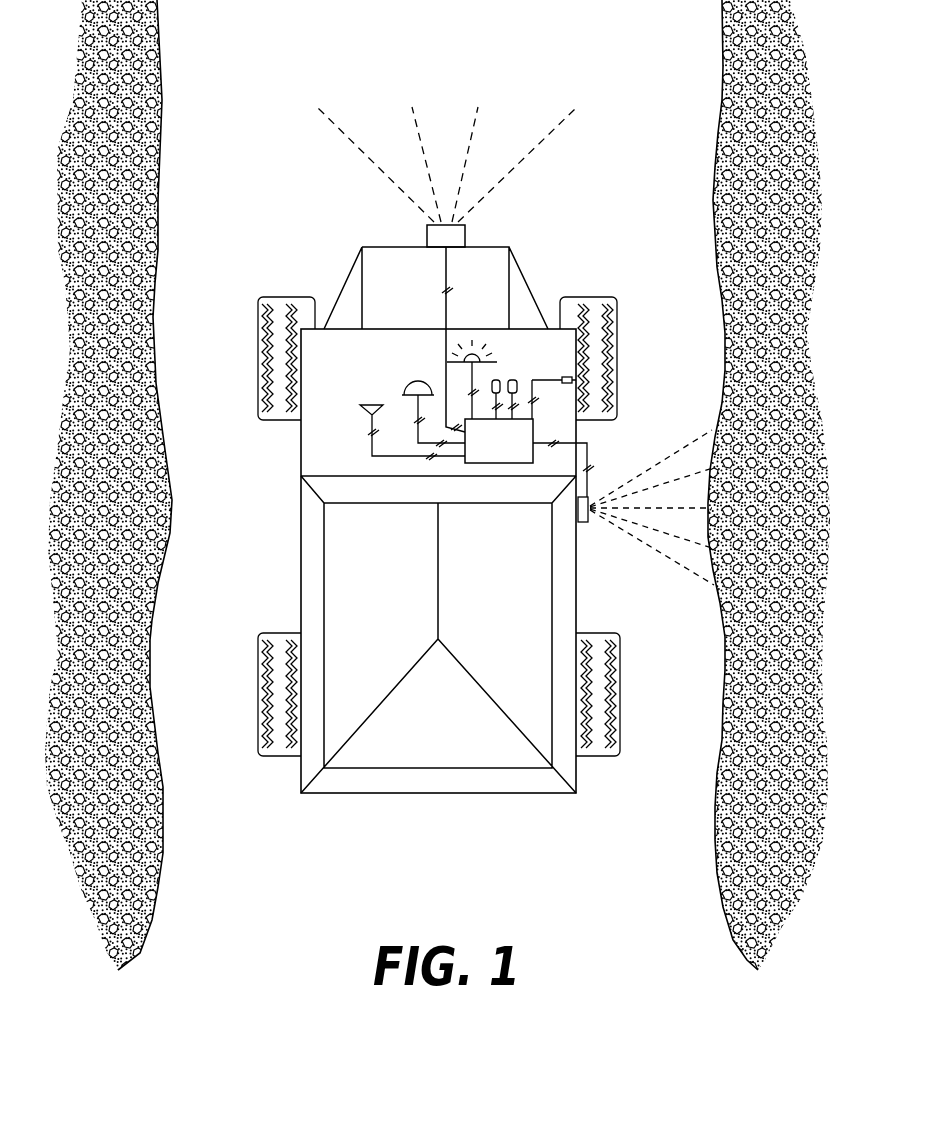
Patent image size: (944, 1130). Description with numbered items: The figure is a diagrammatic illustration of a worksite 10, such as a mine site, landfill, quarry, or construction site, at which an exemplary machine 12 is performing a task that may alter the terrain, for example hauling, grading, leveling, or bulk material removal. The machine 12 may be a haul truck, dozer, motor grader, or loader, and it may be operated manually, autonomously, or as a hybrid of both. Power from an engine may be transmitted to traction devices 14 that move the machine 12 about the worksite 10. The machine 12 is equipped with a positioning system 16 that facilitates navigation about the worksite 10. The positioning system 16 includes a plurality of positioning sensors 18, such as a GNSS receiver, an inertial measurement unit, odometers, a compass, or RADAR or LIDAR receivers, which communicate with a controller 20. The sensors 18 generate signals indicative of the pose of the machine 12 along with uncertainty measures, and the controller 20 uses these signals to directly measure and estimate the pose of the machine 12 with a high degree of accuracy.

The worksite 10 is at (235, 36).
The machine 12 is at (486, 450).
The traction devices 14 is at (618, 358).
The positioning system 16 is at (381, 466).
The positioning sensors 18 is at (466, 238).
The controller 20 is at (511, 452).